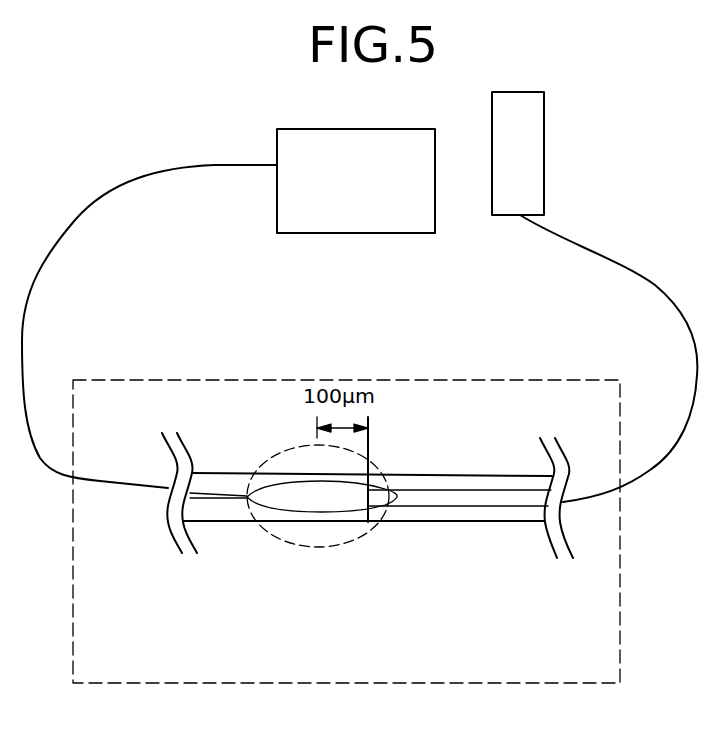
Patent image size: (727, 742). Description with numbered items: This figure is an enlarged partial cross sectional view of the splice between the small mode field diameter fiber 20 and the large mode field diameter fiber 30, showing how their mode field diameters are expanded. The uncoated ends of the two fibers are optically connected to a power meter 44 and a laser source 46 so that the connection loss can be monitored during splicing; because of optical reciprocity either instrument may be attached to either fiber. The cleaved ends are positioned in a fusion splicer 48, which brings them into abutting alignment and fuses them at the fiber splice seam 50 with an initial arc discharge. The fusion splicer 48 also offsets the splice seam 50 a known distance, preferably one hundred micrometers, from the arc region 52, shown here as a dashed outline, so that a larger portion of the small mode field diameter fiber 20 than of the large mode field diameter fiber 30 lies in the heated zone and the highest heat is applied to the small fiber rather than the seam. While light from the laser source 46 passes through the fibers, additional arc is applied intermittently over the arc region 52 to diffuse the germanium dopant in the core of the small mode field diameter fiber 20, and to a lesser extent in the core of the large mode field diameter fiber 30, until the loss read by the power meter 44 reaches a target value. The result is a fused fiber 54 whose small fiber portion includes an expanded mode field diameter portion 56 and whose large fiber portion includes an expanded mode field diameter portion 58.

The small mode field diameter fiber 20 is at (240, 412).
The large mode field diameter fiber 30 is at (503, 433).
The power meter 44 is at (374, 187).
The laser source 46 is at (532, 155).
The fusion splicer 48 is at (484, 590).
The fiber splice seam 50 is at (375, 528).
The arc region 52 is at (302, 546).
The fused fiber 54 is at (430, 364).
The expanded mode field diameter portion 56 is at (258, 521).
The expanded mode field diameter portion 58 is at (388, 502).